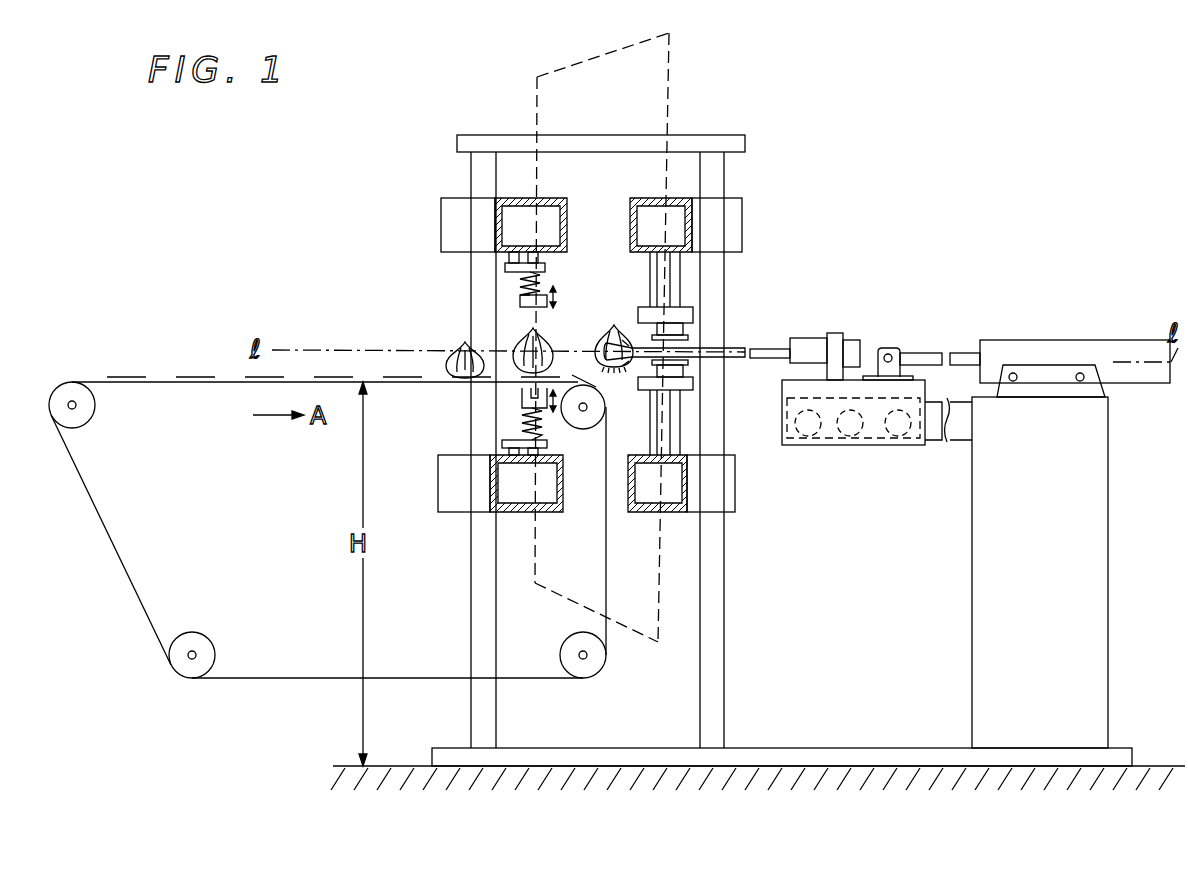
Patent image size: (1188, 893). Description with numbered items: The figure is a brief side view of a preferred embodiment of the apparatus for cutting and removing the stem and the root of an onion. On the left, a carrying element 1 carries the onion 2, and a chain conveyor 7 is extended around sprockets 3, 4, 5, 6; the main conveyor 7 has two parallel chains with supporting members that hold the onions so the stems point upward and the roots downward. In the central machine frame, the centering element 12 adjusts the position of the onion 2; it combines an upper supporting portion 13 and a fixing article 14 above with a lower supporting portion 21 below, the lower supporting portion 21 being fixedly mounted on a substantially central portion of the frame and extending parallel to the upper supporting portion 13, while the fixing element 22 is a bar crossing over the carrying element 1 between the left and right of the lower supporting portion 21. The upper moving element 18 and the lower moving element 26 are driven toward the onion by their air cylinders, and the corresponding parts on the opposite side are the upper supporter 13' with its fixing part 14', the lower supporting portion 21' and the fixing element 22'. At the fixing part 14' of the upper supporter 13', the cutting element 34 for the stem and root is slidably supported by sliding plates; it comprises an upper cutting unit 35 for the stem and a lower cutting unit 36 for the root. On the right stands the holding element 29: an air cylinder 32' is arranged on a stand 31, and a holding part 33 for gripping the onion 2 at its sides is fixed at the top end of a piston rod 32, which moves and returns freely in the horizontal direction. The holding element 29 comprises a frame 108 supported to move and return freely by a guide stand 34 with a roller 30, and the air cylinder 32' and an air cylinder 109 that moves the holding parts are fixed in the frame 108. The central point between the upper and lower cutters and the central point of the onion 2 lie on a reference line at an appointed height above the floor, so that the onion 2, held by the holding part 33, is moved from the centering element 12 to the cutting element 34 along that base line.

The carrying element 1 is at (197, 352).
The onion 2 is at (460, 345).
The sprocket 3 is at (95, 405).
The sprocket 4 is at (600, 400).
The sprocket 5 is at (567, 638).
The sprocket 6 is at (204, 640).
The chain conveyor 7 is at (163, 383).
The centering element 12 is at (587, 58).
The upper supporting portion 13 is at (446, 211).
The upper supporter 13' is at (743, 211).
The fixing article 14 is at (549, 211).
The fixing part 14' is at (650, 211).
The upper cutter 18 is at (544, 298).
The lower supporting portion 21 is at (450, 504).
The lower bearing block 21' is at (739, 497).
The fixing element 22 is at (540, 504).
The lower cylinder 22' is at (653, 504).
The lower cutter 26 is at (520, 396).
The holding element 29 is at (978, 316).
The roller 30 is at (897, 433).
The stand 31 is at (1095, 496).
The piston rod 32 is at (921, 338).
The air cylinder 32' is at (1075, 347).
The holding part 33 is at (602, 335).
The cutting element 34 is at (652, 58).
The upper cutting unit 35 is at (683, 290).
The lower cutting unit 36 is at (681, 407).
The frame 108 is at (810, 446).
The air cylinder 109 is at (800, 338).